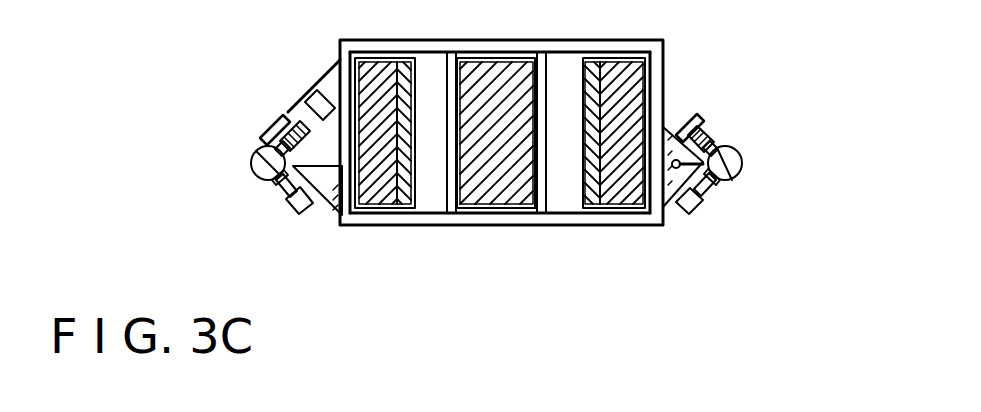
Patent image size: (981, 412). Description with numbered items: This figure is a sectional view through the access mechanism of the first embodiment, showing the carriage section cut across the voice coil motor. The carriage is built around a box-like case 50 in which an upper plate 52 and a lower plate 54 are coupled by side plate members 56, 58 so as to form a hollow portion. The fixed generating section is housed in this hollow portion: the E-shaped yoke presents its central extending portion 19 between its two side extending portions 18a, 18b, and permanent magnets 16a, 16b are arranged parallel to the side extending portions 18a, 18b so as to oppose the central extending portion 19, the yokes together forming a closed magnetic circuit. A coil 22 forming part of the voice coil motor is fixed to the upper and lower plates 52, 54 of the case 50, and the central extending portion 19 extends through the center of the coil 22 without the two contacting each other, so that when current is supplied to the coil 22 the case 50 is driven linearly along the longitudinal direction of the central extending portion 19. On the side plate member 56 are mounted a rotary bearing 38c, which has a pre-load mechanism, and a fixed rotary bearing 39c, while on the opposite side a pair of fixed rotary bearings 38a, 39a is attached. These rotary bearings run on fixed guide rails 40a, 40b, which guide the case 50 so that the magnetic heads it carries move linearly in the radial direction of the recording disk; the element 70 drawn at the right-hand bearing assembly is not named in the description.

The permanent magnet 16a is at (608, 167).
The permanent magnet 16b is at (401, 214).
The side extending portion 18a is at (652, 63).
The side extending portion 18b is at (377, 63).
The central extending portion 19 is at (525, 213).
The coil 22 is at (533, 72).
The rotary bearing 38a is at (707, 128).
The rotary bearing 38c is at (288, 113).
The fixed rotary bearing 39a is at (702, 194).
The fixed rotary bearing 39c is at (288, 204).
The guide rail 40a is at (732, 177).
The guide rail 40b is at (259, 176).
The case 50 is at (462, 232).
The upper plate 52 is at (580, 47).
The lower plate 54 is at (487, 225).
The side plate member 56 is at (348, 144).
The side plate member 58 is at (653, 92).
The pivot 70 is at (737, 149).